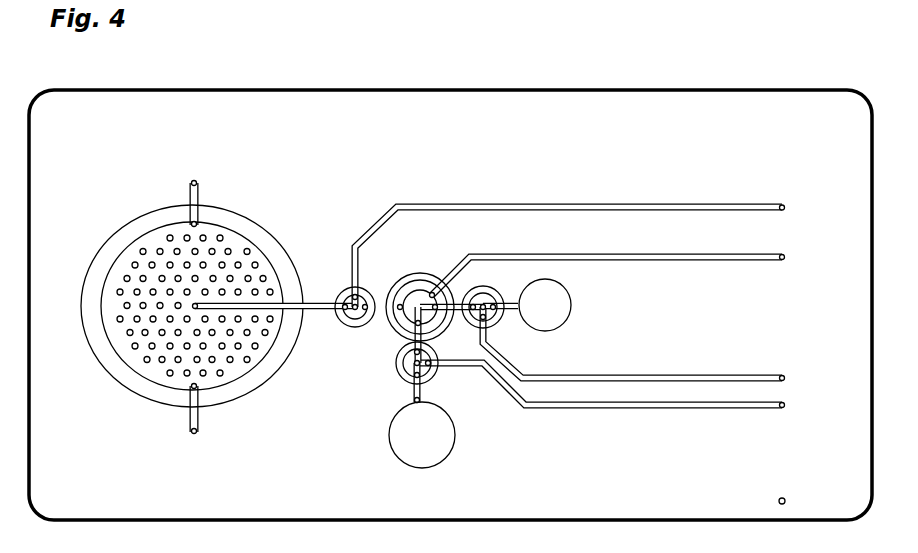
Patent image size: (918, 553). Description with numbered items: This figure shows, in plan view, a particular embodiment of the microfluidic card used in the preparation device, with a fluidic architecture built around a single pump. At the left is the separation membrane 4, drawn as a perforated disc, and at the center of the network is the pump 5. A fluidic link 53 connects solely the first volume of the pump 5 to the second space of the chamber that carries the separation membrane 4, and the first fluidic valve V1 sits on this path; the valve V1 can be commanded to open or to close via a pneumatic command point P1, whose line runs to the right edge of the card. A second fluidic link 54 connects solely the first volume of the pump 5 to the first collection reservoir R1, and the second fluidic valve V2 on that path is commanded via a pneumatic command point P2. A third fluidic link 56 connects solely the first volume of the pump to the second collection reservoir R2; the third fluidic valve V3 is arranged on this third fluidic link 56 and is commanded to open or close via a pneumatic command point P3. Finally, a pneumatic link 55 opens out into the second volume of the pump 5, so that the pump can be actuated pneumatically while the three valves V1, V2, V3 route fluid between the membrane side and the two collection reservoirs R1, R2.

The separation membrane 4 is at (152, 237).
The pump 5 is at (397, 285).
The fluidic link 53 is at (271, 292).
The second fluidic link 54 is at (413, 397).
The pneumatic link 55 is at (645, 258).
The third fluidic link 56 is at (455, 305).
The first fluidic valve V1 is at (348, 290).
The second fluidic valve V2 is at (396, 363).
The third fluidic valve V3 is at (487, 320).
The first collection reservoir R1 is at (440, 443).
The second collection reservoir R2 is at (563, 305).
The pneumatic command point P1 is at (591, 252).
The pneumatic command point P2 is at (622, 390).
The pneumatic command point P3 is at (655, 348).